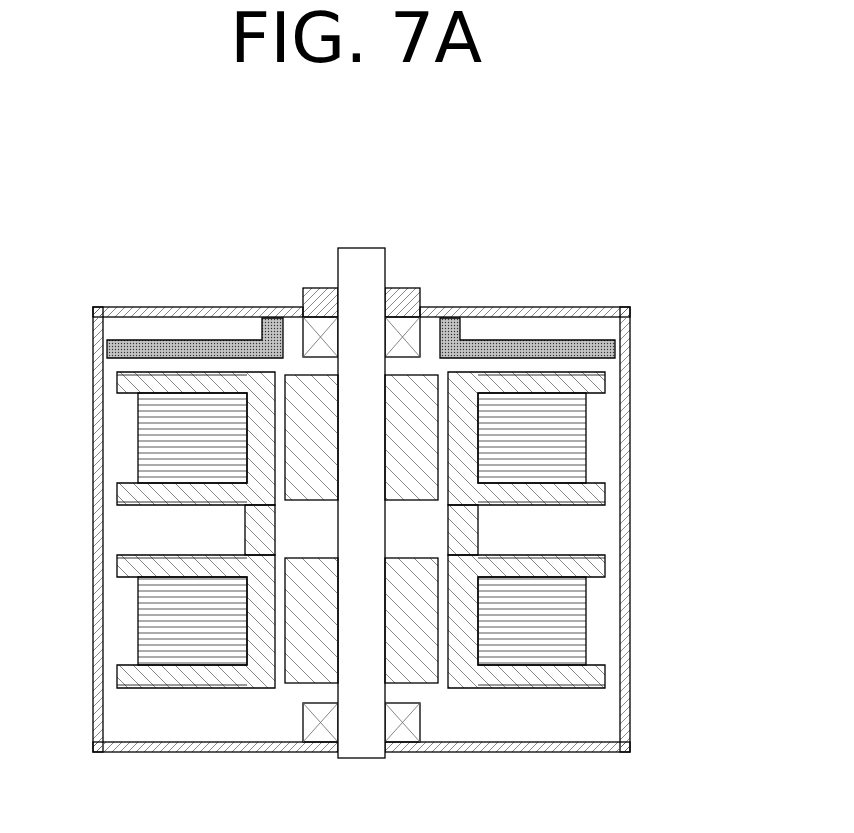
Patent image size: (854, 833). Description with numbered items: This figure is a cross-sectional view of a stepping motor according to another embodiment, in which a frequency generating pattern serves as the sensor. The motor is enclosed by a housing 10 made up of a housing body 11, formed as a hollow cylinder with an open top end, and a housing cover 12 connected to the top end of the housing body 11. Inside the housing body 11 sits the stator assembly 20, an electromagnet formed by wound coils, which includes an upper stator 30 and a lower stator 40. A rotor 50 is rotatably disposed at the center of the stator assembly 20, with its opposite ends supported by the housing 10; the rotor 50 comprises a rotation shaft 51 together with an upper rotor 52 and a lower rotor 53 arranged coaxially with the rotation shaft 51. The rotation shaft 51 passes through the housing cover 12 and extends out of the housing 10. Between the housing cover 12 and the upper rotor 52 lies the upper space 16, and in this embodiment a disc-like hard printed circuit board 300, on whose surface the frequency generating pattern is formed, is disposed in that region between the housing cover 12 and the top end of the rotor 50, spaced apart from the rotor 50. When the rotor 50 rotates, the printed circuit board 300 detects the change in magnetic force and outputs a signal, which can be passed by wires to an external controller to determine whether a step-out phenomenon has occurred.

The housing 10 is at (405, 504).
The housing body 11 is at (627, 385).
The housing cover 12 is at (477, 309).
The upper space 16 is at (160, 330).
The printed circuit board 300 is at (604, 337).
The stator assembly 20 is at (367, 530).
The upper stator 30 is at (598, 443).
The lower stator 40 is at (594, 640).
The rotor 50 is at (466, 494).
The rotation shaft 51 is at (384, 248).
The upper rotor 52 is at (425, 488).
The lower rotor 53 is at (428, 678).